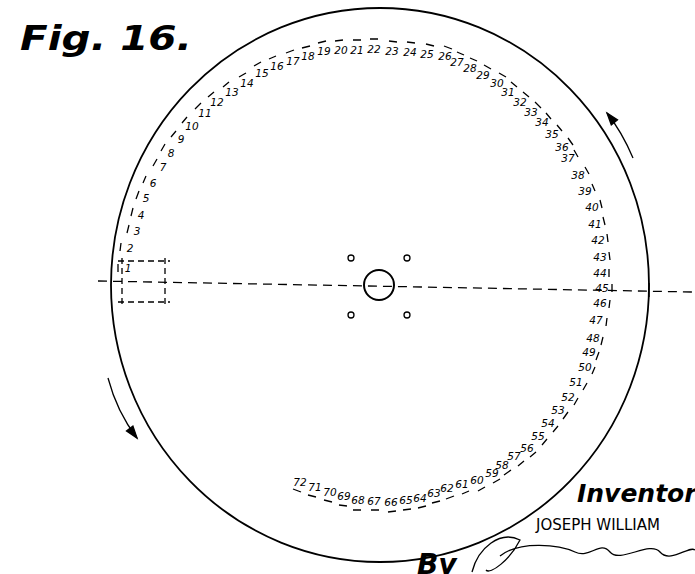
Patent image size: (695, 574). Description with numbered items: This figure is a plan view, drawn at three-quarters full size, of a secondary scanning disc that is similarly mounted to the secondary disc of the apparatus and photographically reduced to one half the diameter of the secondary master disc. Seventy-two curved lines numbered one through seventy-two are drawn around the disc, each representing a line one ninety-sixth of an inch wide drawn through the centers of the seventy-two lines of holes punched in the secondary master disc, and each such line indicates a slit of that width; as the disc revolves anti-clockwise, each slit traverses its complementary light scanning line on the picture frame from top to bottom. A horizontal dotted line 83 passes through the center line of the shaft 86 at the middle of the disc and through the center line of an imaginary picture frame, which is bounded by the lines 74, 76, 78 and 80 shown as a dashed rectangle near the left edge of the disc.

The line 74 is at (122, 287).
The line 76 is at (167, 288).
The line 78 is at (157, 261).
The line 80 is at (148, 302).
The horizontal dotted line 83 is at (276, 283).
The shaft 86 is at (378, 278).